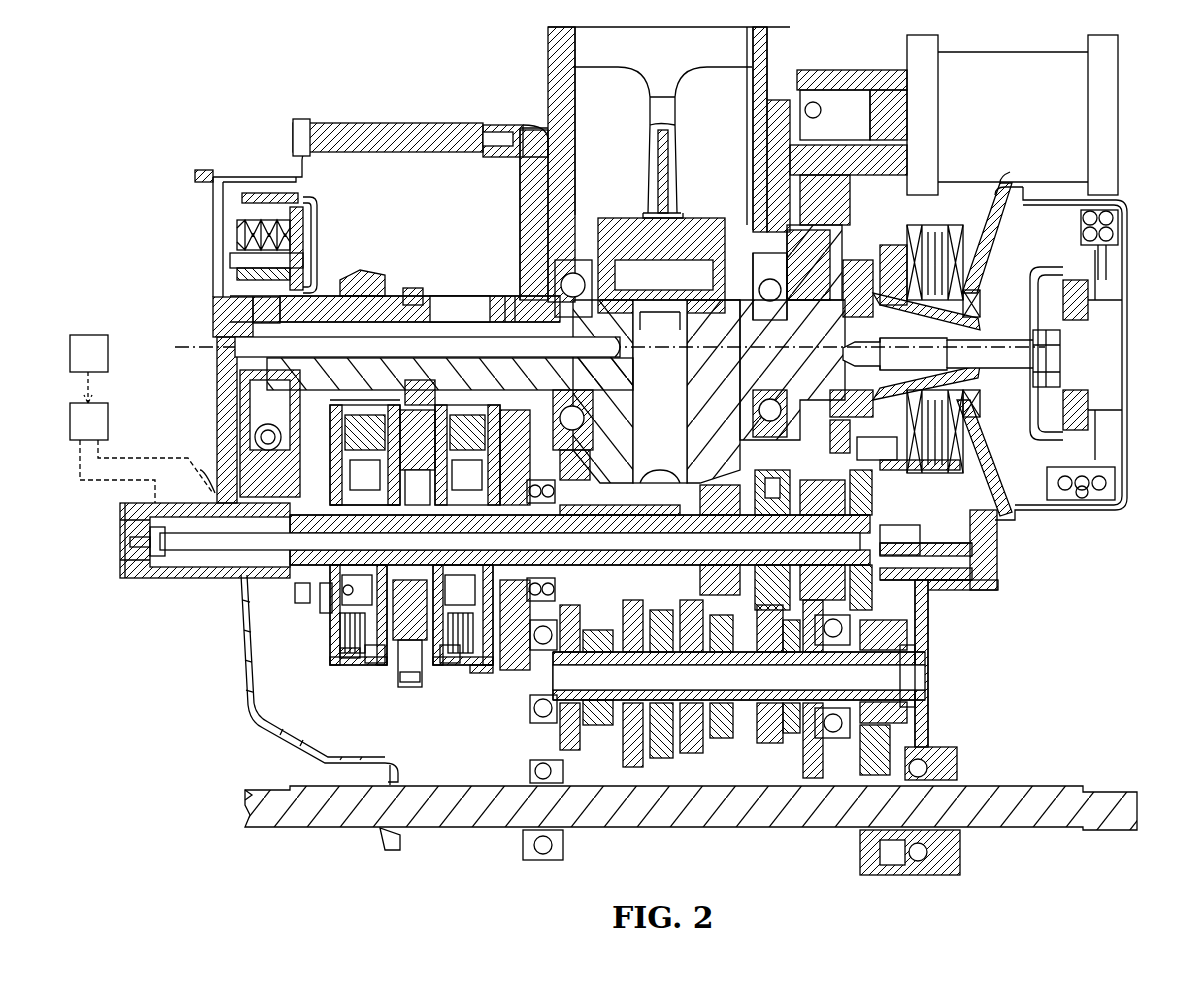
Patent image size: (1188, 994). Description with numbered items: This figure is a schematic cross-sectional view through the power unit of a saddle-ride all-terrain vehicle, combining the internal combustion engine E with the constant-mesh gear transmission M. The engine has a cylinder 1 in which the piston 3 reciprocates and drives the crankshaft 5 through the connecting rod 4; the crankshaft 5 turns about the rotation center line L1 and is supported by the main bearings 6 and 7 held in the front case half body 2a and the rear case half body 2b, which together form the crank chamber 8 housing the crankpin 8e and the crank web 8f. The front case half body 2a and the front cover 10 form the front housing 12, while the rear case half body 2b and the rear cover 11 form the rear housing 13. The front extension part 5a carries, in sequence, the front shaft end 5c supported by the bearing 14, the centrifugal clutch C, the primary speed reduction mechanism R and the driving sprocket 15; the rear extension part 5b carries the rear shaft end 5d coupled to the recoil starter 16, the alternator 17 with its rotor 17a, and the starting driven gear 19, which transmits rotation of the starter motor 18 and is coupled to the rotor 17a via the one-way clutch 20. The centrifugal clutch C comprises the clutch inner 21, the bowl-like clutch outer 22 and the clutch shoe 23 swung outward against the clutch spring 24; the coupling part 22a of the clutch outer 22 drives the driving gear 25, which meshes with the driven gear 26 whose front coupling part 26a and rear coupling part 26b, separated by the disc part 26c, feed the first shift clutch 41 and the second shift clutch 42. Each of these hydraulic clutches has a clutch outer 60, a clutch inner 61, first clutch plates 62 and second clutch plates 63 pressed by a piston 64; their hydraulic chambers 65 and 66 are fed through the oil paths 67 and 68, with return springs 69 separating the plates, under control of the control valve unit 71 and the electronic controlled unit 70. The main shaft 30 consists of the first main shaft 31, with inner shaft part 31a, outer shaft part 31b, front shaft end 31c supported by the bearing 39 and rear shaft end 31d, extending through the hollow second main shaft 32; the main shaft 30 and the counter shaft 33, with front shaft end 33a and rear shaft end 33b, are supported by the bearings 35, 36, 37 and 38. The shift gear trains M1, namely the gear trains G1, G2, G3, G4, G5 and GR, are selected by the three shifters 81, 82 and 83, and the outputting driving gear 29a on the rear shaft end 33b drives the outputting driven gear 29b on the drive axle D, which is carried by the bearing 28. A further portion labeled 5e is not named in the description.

The cylinder 1 is at (548, 100).
The front case half body 2a is at (545, 180).
The rear case half body 2b is at (760, 193).
The piston 3 is at (717, 58).
The connecting rod 4 is at (675, 162).
The crankshaft 5 is at (530, 280).
The front extension part 5a is at (483, 313).
The rear extension part 5b is at (785, 412).
The front shaft end 5c is at (216, 305).
The rear shaft end 5d is at (980, 313).
The crankcase bottom wall 5e is at (691, 807).
The main bearing 6 is at (573, 277).
The main bearing 7 is at (767, 288).
The crank chamber 8 is at (653, 417).
The crankpin 8e is at (660, 330).
The crank web 8f is at (690, 475).
The front cover 10 is at (377, 120).
The rear cover 11 is at (930, 612).
The front housing 12 is at (473, 177).
The rear housing 13 is at (943, 532).
The bearing 14 is at (213, 367).
The driving sprocket 15 is at (513, 313).
The recoil starter 16 is at (1127, 256).
The alternator 17 is at (979, 228).
The rotor 17a is at (945, 228).
The starter motor 18 is at (1072, 125).
The starting driven gear 19 is at (808, 273).
The one-way clutch 20 is at (800, 335).
The clutch inner 21 is at (335, 221).
The clutch outer 22 is at (243, 193).
The coupling part 22a is at (357, 287).
The clutch shoe 23 is at (237, 223).
The clutch spring 24 is at (253, 403).
The driving gear 25 is at (413, 290).
The driven gear 26 is at (415, 704).
The front coupling part 26a is at (271, 422).
The rear coupling part 26b is at (512, 475).
The disc part 26c is at (482, 705).
The bearing 28 is at (933, 775).
The outputting driving gear 29a is at (900, 637).
The outputting driven gear 29b is at (893, 753).
The main shaft 30 is at (831, 547).
The first main shaft 31 is at (535, 705).
The inner shaft part 31a is at (665, 515).
The outer shaft part 31b is at (273, 670).
The front shaft end 31c is at (251, 598).
The rear shaft end 31d is at (890, 540).
The second main shaft 32 is at (597, 495).
The counter shaft 33 is at (893, 685).
The front shaft end 33a is at (553, 680).
The rear shaft end 33b is at (917, 693).
The bearing 35 is at (533, 480).
The bearing 36 is at (840, 500).
The bearing 37 is at (543, 790).
The bearing 38 is at (855, 620).
The bearing 39 is at (215, 493).
The first shift clutch 41 is at (363, 673).
The second shift clutch 42 is at (487, 707).
The clutch outer 60 is at (365, 687).
The clutch inner 61 is at (450, 475).
The first clutch plates 62 is at (350, 415).
The second clutch plates 63 is at (425, 392).
The piston 64 is at (373, 663).
The hydraulic chamber 65 is at (353, 648).
The hydraulic chamber 66 is at (405, 680).
The oil path 67 is at (330, 583).
The oil path 68 is at (300, 587).
The return spring 69 is at (270, 703).
The electronic controlled unit 70 is at (110, 345).
The control valve unit 71 is at (110, 412).
The shifter 81 is at (750, 500).
The shifter 82 is at (765, 756).
The shifter 83 is at (605, 730).
The centrifugal clutch C is at (343, 226).
The drive axle D is at (745, 820).
The internal combustion engine E is at (826, 53).
The first speed gear train G1 is at (820, 788).
The second speed gear train G2 is at (640, 783).
The third speed gear train G3 is at (704, 778).
The fourth speed gear train G4 is at (577, 773).
The fifth speed gear train G5 is at (782, 770).
The rearward gear train GR is at (672, 788).
The rotation center line L1 is at (178, 340).
The gear transmission M is at (247, 588).
The shift gear trains M1 is at (788, 773).
The primary speed reduction mechanism R is at (398, 272).